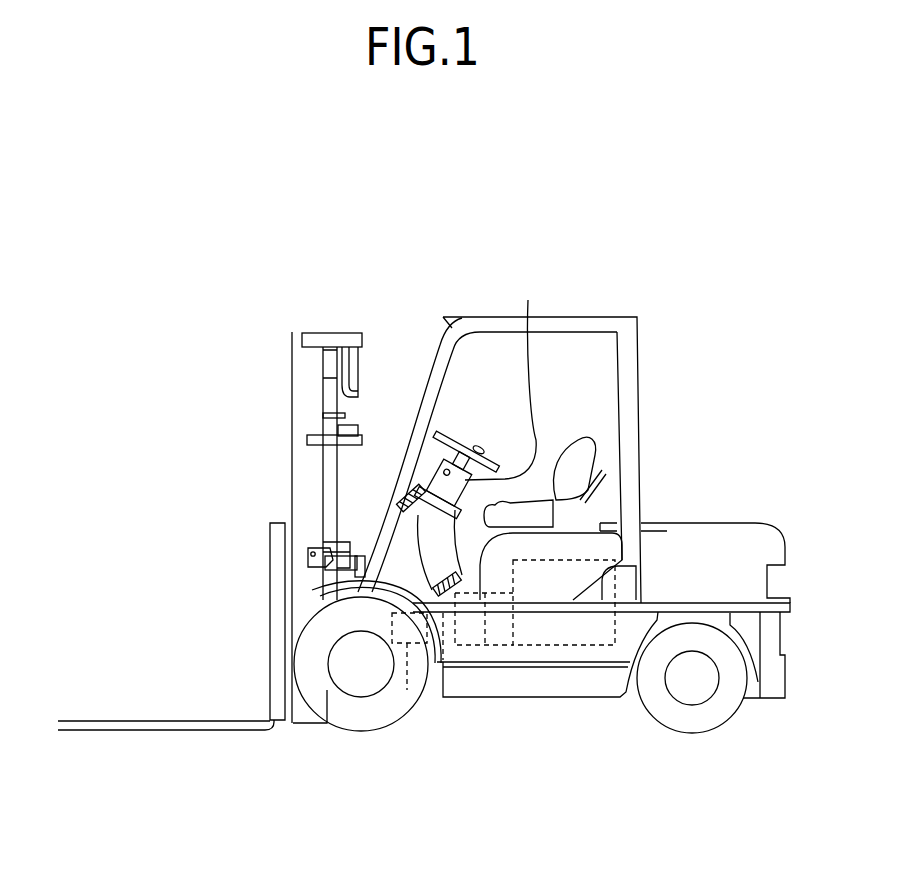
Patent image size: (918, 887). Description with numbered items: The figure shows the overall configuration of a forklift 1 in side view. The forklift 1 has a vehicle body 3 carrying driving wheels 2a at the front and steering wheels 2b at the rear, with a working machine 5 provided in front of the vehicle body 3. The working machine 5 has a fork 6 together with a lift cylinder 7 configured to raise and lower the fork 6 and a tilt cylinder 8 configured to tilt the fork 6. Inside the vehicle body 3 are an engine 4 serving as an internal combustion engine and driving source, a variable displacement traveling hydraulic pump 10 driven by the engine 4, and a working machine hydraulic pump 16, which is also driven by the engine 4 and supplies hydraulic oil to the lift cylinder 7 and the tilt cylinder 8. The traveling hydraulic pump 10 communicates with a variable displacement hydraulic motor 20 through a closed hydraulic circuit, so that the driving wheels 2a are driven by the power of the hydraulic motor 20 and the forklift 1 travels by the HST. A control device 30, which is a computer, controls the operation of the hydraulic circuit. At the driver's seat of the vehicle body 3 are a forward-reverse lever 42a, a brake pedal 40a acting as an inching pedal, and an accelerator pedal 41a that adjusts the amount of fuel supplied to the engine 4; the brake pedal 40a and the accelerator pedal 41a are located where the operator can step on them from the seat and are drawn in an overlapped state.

The forklift 1 is at (624, 201).
The driving wheels 2a is at (358, 723).
The steering wheels 2b is at (690, 723).
The vehicle body 3 is at (510, 688).
The engine 4 is at (572, 646).
The working machine 5 is at (378, 238).
The fork 6 is at (110, 720).
The lift cylinder 7 is at (327, 470).
The tilt cylinder 8 is at (348, 556).
The variable displacement traveling hydraulic pump 10 is at (445, 642).
The working machine hydraulic pump 16 is at (472, 644).
The variable displacement hydraulic motor 20 is at (425, 662).
The control device 30 is at (418, 660).
The brake pedal 40a is at (445, 563).
The accelerator pedal 41a is at (445, 563).
The forward-reverse lever 42a is at (528, 300).